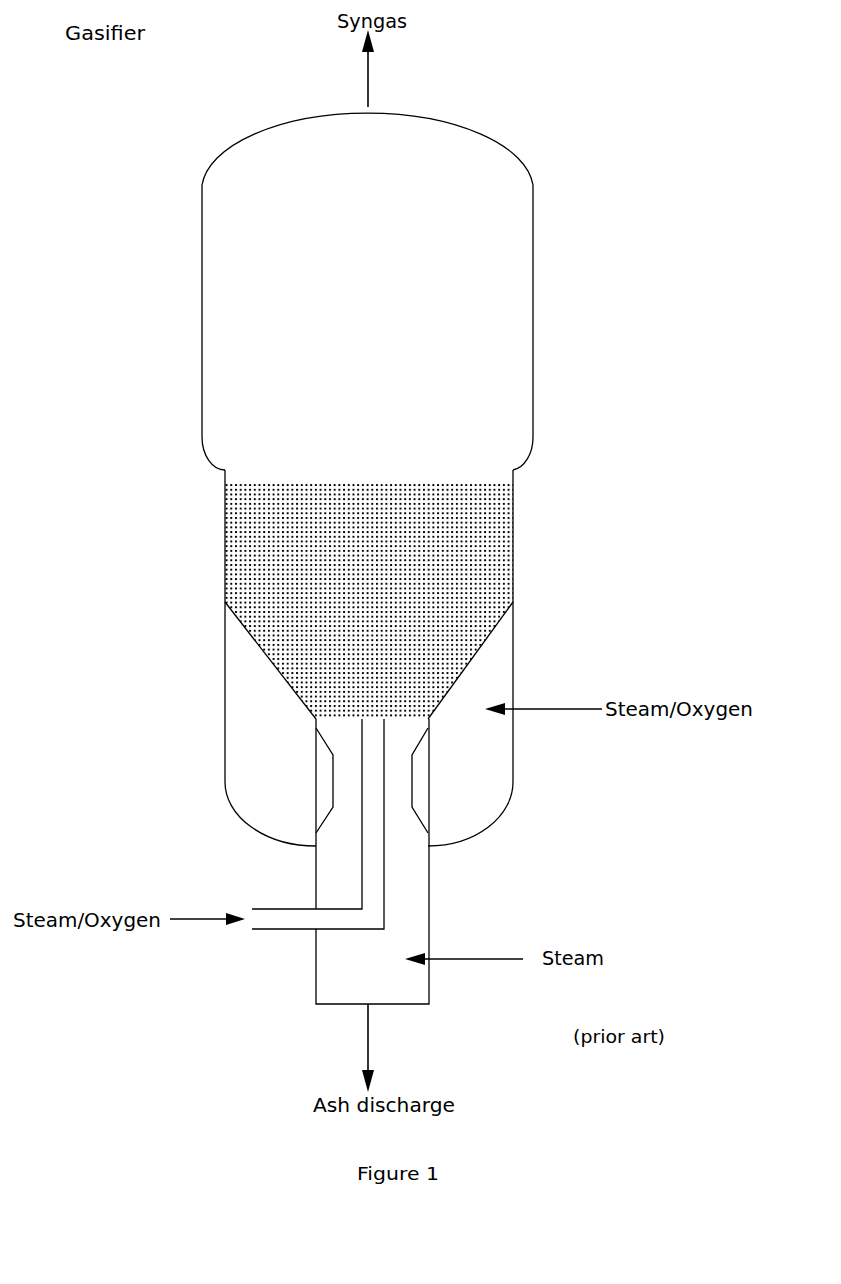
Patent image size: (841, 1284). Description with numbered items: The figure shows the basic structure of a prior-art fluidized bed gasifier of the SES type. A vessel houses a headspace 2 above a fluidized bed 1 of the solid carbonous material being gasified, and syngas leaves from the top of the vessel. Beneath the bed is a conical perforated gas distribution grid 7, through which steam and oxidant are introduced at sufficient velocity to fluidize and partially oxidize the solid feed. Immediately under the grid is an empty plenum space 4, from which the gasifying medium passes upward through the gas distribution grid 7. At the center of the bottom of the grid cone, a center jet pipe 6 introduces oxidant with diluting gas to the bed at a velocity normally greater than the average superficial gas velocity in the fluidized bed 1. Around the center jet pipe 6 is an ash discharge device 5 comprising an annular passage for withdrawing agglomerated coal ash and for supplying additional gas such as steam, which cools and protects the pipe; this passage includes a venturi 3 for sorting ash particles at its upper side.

The fluidized bed 1 is at (277, 531).
The headspace 2 is at (242, 284).
The venturi 3 is at (328, 789).
The plenum space 4 is at (267, 683).
The ash discharge device 5 is at (316, 973).
The center jet pipe 6 is at (380, 886).
The gas distribution grid 7 is at (484, 644).